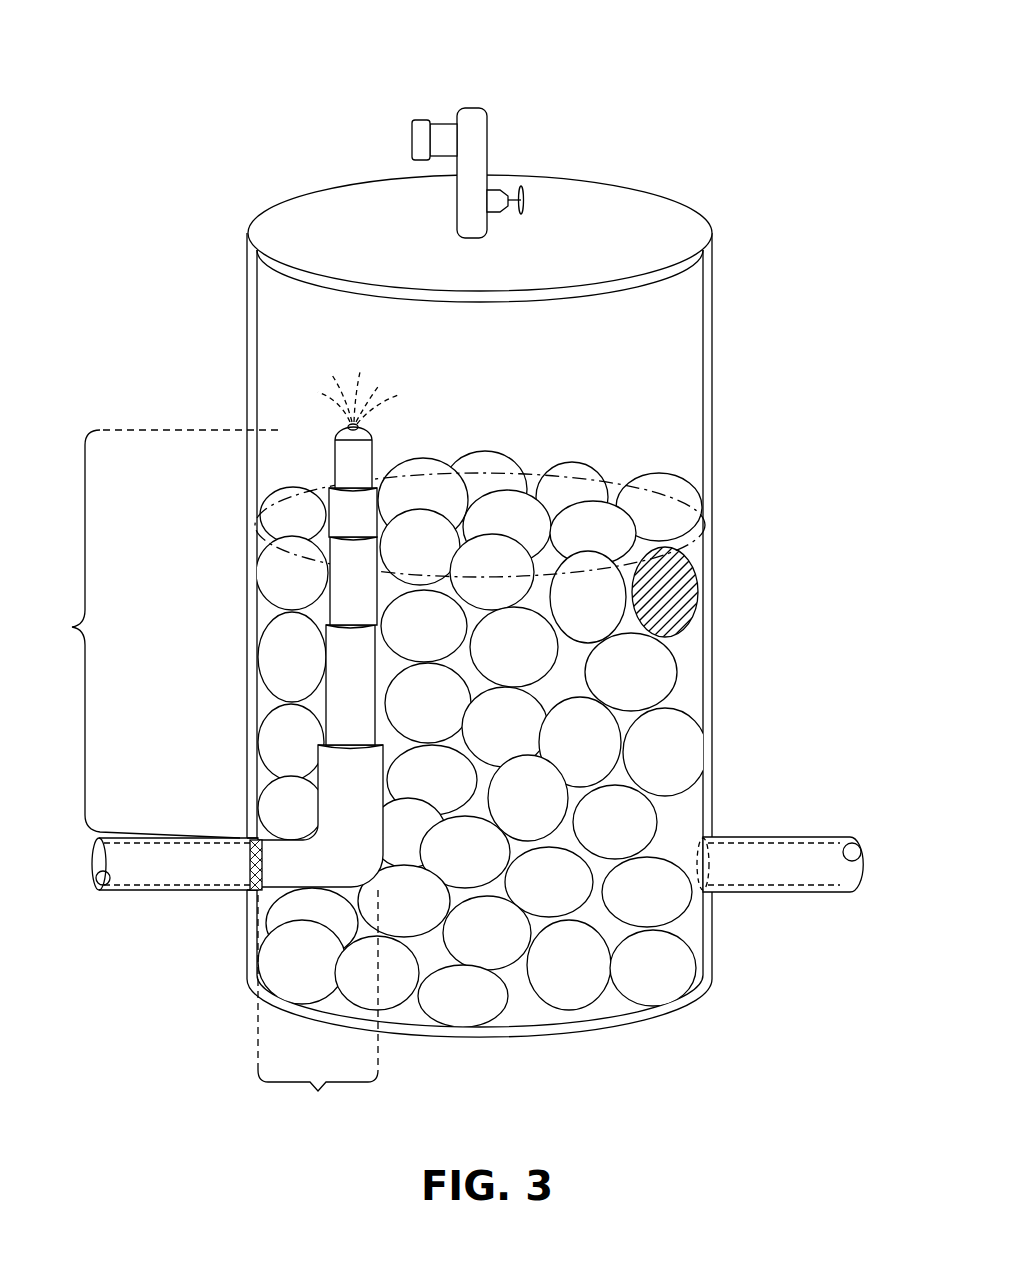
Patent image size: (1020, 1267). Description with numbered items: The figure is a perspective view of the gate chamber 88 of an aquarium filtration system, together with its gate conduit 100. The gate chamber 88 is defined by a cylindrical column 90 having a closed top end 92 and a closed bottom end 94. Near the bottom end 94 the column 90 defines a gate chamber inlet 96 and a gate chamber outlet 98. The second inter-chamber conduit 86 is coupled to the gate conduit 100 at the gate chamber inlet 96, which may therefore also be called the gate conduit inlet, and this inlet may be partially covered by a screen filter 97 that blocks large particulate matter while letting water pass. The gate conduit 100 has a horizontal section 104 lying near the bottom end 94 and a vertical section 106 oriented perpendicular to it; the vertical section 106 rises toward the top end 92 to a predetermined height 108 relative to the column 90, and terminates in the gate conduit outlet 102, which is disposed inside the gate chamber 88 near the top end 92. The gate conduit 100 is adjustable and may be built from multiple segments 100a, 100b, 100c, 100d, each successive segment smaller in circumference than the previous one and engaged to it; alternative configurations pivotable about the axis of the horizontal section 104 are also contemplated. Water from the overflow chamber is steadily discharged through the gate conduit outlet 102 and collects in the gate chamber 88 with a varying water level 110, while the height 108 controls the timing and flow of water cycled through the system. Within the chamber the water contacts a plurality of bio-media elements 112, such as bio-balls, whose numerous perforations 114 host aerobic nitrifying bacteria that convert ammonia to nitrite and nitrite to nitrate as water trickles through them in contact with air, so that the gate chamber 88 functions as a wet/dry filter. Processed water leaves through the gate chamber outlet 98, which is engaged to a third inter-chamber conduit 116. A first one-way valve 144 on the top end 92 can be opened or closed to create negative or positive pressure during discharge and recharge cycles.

The gate chamber 88 is at (241, 88).
The first one-way valve 144 is at (440, 118).
The top end 92 is at (645, 203).
The cylindrical column 90 is at (712, 289).
The predetermined height 108 is at (325, 410).
The gate conduit outlet 102 is at (343, 432).
The gate conduit segment 100d is at (345, 452).
The gate conduit segment 100c is at (345, 510).
The gate conduit 100 is at (355, 545).
The gate conduit segment 100b is at (340, 664).
The gate conduit segment 100a is at (330, 783).
The vertical section 106 is at (145, 634).
The water level 110 is at (728, 517).
The perforations 114 is at (663, 554).
The bio-media elements 112 is at (673, 585).
The second inter-chamber conduit 86 is at (142, 890).
The gate chamber inlet 96 is at (250, 857).
The screen filter 97 is at (252, 890).
The gate chamber outlet 98 is at (712, 862).
The third inter-chamber conduit 116 is at (822, 893).
The bottom end 94 is at (622, 1015).
The horizontal section 104 is at (318, 1011).